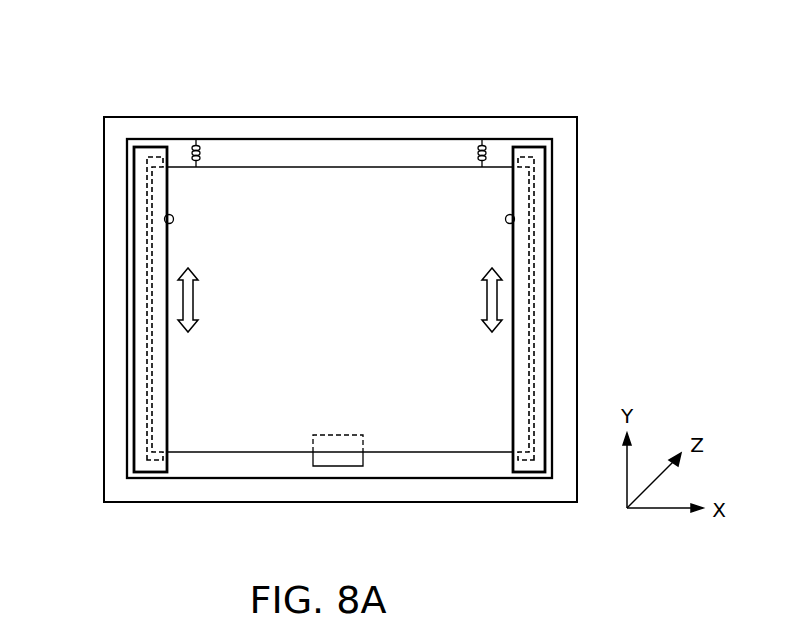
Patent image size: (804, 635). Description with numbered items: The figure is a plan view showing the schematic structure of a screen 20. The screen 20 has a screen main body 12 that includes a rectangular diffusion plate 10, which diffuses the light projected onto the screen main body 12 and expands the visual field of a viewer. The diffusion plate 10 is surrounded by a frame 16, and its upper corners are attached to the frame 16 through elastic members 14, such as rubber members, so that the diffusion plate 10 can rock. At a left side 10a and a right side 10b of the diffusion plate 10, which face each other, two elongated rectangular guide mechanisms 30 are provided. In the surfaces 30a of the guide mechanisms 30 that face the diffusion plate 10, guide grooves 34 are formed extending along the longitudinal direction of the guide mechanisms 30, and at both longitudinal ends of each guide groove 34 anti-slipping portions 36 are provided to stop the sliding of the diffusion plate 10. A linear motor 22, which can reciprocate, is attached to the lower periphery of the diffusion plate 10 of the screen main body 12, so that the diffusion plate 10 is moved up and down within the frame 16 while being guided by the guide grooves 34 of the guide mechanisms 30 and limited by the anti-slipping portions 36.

The screen 20 is at (578, 84).
The frame 16 is at (567, 295).
The diffusion plate 10 is at (402, 184).
The screen main body 12 is at (290, 167).
The left side of the diffusion plate 10a is at (147, 350).
The right side of the diffusion plate 10b is at (536, 350).
The guide mechanism 30 is at (137, 190).
The surface of the guide mechanism 30a is at (164, 212).
The anti-slipping portion 36 is at (147, 153).
The guide groove 34 is at (166, 456).
The elastic member 14 is at (192, 150).
The linear motor 22 is at (337, 462).